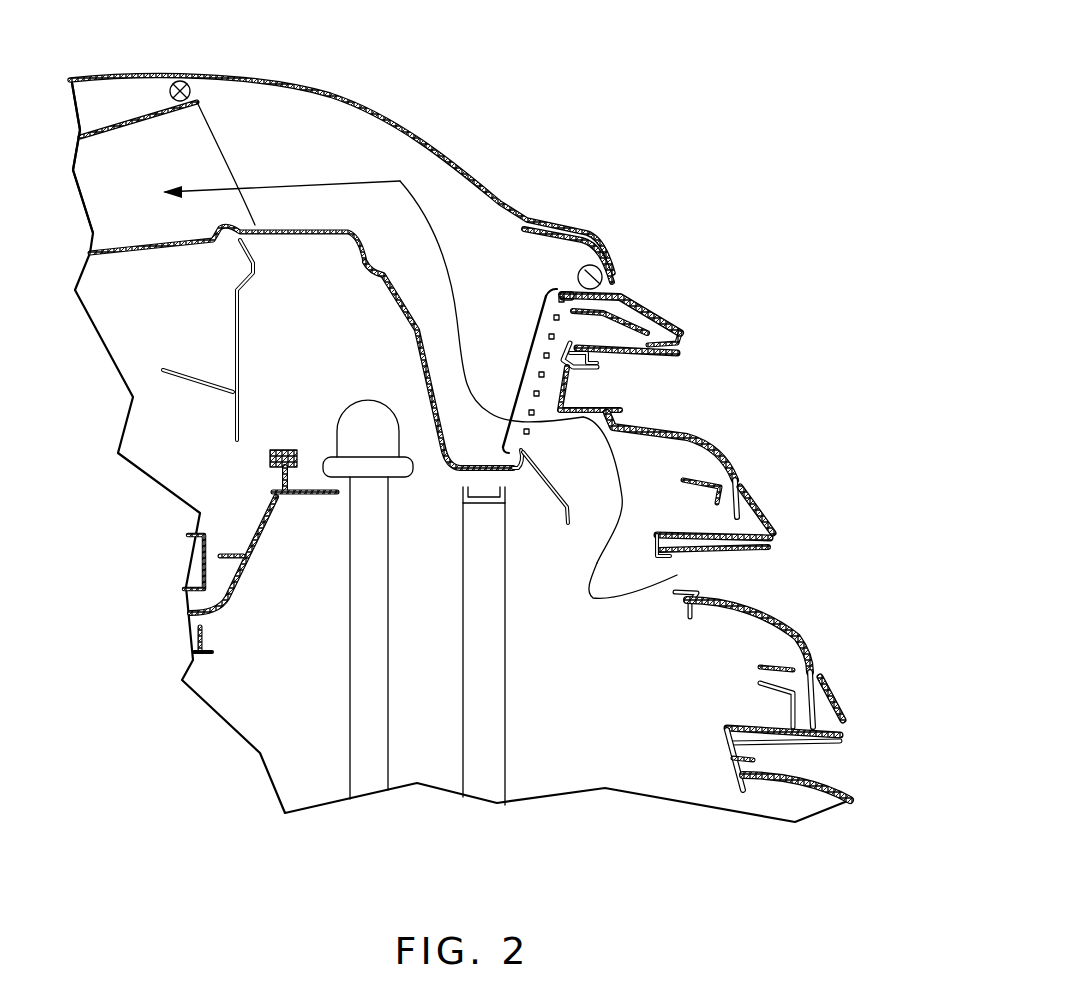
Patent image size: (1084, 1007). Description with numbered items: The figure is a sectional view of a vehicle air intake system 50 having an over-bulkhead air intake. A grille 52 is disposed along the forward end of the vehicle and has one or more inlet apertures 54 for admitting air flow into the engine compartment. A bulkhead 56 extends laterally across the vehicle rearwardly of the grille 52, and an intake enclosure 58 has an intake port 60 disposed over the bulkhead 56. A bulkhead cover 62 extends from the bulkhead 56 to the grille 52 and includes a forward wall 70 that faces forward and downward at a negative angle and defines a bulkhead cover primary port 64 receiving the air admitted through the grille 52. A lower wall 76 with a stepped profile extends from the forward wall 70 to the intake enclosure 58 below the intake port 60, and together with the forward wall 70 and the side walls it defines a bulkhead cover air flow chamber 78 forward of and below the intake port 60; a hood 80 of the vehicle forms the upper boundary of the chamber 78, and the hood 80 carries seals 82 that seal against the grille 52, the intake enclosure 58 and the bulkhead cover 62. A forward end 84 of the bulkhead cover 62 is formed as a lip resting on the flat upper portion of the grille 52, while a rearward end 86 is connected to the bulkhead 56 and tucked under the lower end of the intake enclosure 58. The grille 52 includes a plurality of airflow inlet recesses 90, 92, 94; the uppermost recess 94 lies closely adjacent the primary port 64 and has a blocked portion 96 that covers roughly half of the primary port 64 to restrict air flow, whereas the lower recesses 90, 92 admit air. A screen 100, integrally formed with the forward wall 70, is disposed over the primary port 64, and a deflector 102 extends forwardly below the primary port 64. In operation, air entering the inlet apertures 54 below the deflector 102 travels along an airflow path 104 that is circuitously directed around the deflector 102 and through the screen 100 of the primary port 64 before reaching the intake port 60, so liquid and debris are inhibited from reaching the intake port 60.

The vehicle air intake system 50 is at (630, 815).
The grille 52 is at (800, 477).
The inlet apertures 54 is at (697, 586).
The bulkhead 56 is at (238, 368).
The intake enclosure 58 is at (113, 187).
The intake port 60 is at (208, 155).
The bulkhead cover 62 is at (381, 293).
The bulkhead cover primary port 64 is at (538, 462).
The forward wall 70 is at (518, 345).
The lower wall 76 is at (448, 470).
The bulkhead cover air flow chamber 78 is at (448, 277).
The hood 80 is at (368, 92).
The seals 82 is at (186, 82).
The forward end 84 is at (563, 292).
The rearward end 86 is at (258, 250).
The airflow inlet recess 90 is at (832, 760).
The airflow inlet recess 92 is at (791, 652).
The uppermost airflow inlet recess 94 is at (682, 360).
The blocked portion 96 is at (600, 390).
The screen 100 is at (541, 397).
The deflector 102 is at (565, 560).
The airflow path 104 is at (618, 597).